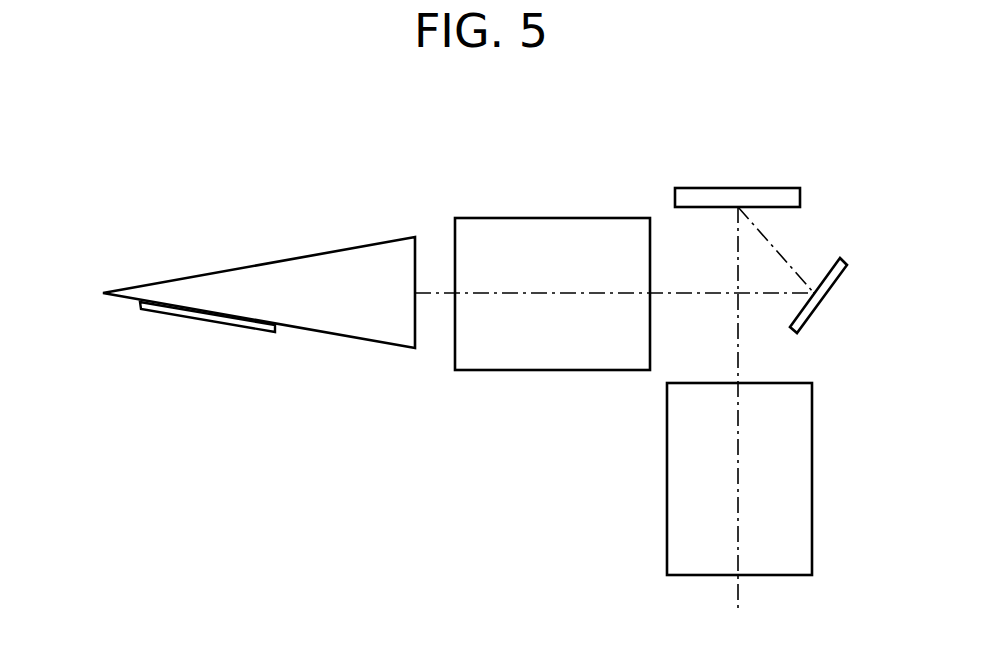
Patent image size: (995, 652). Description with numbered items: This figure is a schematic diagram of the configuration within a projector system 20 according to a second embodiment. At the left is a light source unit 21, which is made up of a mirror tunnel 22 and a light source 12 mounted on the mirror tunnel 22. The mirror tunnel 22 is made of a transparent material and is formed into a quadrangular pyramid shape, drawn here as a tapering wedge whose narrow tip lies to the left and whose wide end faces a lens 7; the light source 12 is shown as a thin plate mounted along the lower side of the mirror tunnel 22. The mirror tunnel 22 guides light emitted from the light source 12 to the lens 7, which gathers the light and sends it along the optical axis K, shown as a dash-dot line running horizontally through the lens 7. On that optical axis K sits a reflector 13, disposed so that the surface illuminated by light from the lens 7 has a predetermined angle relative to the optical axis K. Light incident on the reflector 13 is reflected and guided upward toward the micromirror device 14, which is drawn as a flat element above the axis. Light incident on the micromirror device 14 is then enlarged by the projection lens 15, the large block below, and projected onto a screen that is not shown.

The lens 7 is at (608, 218).
The light source 12 is at (215, 323).
The reflector 13 is at (842, 257).
The micromirror device 14 is at (775, 188).
The projection lens 15 is at (812, 440).
The projector system 20 is at (655, 142).
The light source unit 21 is at (385, 172).
The mirror tunnel 22 is at (272, 262).
The optical axis K is at (435, 296).